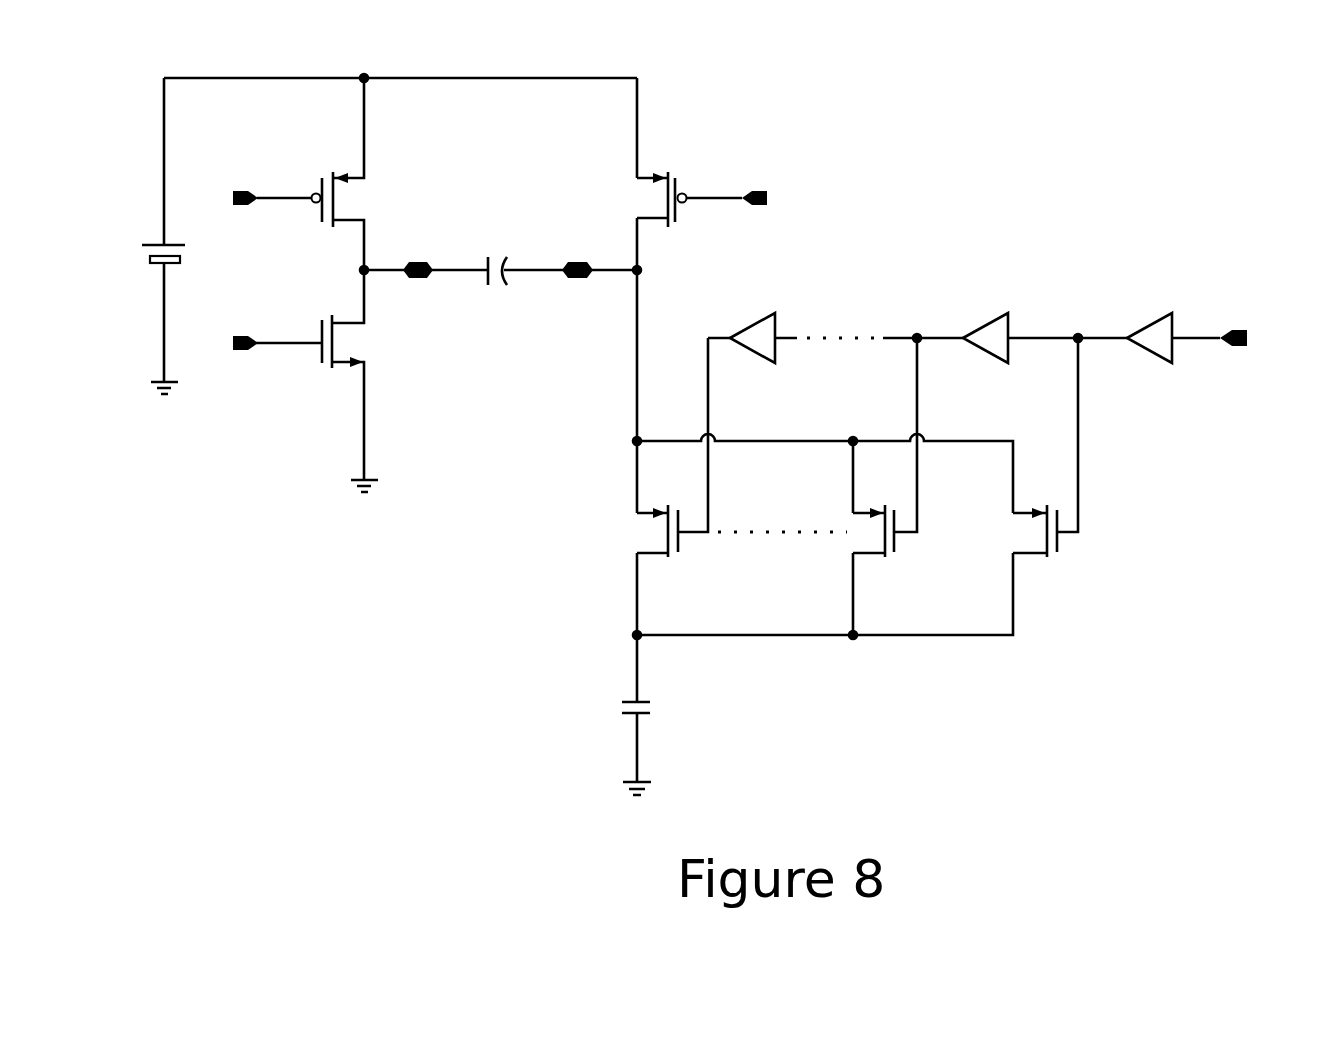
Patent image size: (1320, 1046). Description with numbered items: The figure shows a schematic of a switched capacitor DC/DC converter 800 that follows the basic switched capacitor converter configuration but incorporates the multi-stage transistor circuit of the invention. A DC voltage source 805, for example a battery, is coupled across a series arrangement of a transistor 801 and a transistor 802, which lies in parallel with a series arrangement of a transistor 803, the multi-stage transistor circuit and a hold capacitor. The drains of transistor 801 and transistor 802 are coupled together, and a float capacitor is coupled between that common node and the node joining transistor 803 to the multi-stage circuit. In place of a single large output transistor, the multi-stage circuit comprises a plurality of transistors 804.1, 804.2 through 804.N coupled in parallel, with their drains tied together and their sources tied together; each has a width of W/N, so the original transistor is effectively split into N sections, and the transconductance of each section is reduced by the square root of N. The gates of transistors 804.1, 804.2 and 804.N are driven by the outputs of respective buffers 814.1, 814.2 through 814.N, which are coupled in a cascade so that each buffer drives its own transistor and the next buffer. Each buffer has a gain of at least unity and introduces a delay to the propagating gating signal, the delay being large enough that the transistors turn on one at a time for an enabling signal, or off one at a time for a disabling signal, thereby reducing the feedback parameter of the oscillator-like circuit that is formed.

The switched capacitor DC/DC converter 800 is at (1066, 142).
The transistor 801 is at (298, 381).
The transistor 802 is at (288, 174).
The transistor 803 is at (705, 183).
The transistor 804.1 is at (1048, 465).
The transistor 804.2 is at (890, 465).
The transistor 804.N is at (742, 465).
The DC voltage source 805 is at (147, 236).
The buffer 814.1 is at (1192, 324).
The buffer 814.2 is at (1020, 324).
The buffer 814.N is at (835, 324).